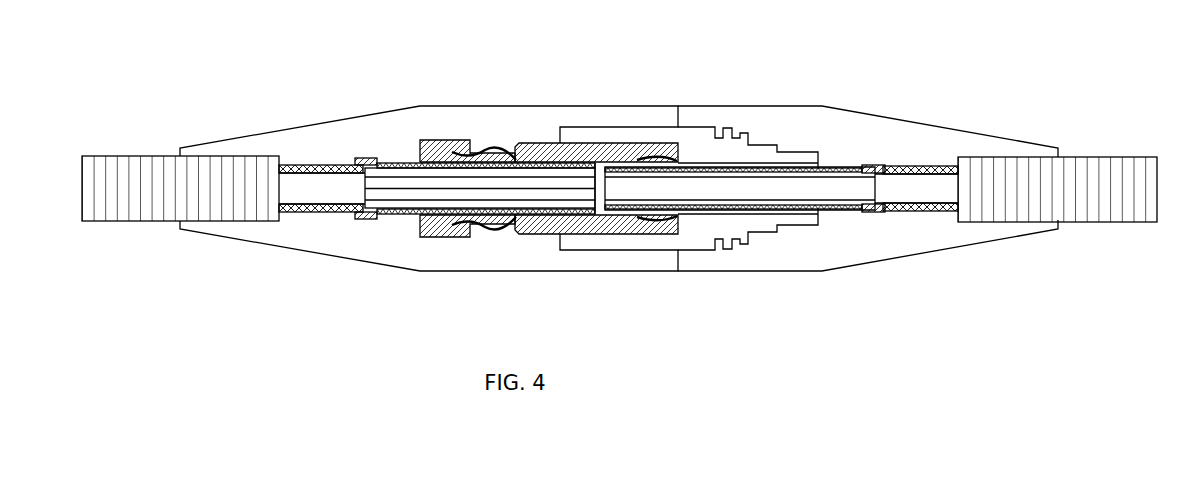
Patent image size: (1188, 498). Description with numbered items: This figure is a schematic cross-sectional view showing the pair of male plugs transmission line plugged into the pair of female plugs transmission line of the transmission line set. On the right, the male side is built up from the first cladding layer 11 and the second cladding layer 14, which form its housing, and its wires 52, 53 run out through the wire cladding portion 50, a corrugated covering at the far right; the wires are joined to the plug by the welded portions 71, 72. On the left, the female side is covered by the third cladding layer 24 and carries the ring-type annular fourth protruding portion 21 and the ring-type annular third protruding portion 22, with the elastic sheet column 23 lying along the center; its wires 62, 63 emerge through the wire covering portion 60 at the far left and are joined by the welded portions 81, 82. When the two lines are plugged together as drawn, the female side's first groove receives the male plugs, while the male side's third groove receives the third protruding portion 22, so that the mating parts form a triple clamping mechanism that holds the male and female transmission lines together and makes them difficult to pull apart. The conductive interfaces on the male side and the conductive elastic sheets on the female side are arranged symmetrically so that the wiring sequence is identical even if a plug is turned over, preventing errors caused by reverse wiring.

The first cladding layer 11 is at (769, 117).
The second cladding layer 14 is at (857, 125).
The fourth protruding portion 21 is at (476, 115).
The third protruding portion 22 is at (550, 142).
The elastic sheet column 23 is at (517, 178).
The third cladding layer 24 is at (386, 124).
The wire cladding portion 50 is at (1092, 172).
The wire 52 is at (936, 212).
The wire 53 is at (936, 167).
The wire covering portion 60 is at (151, 168).
The wire 62 is at (307, 210).
The wire 63 is at (307, 167).
The welded portion 71 is at (882, 163).
The welded portion 72 is at (881, 214).
The welded portion 81 is at (362, 157).
The welded portion 82 is at (363, 220).